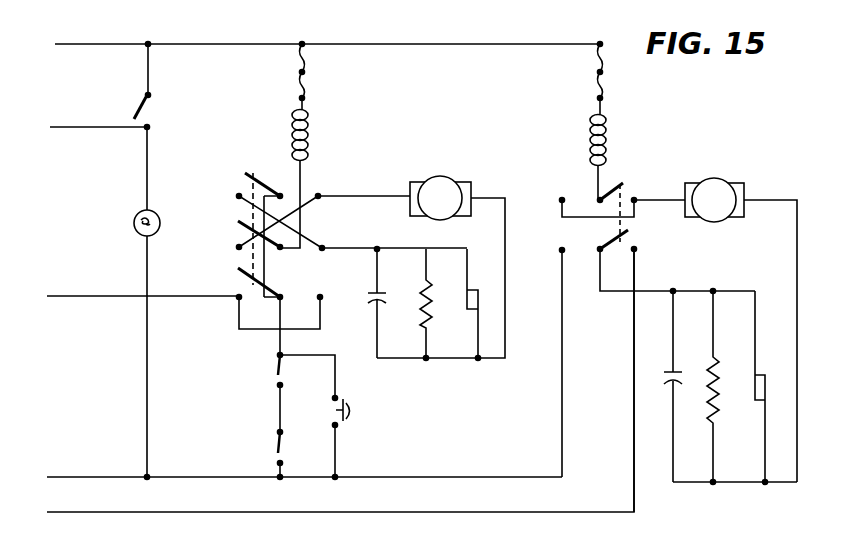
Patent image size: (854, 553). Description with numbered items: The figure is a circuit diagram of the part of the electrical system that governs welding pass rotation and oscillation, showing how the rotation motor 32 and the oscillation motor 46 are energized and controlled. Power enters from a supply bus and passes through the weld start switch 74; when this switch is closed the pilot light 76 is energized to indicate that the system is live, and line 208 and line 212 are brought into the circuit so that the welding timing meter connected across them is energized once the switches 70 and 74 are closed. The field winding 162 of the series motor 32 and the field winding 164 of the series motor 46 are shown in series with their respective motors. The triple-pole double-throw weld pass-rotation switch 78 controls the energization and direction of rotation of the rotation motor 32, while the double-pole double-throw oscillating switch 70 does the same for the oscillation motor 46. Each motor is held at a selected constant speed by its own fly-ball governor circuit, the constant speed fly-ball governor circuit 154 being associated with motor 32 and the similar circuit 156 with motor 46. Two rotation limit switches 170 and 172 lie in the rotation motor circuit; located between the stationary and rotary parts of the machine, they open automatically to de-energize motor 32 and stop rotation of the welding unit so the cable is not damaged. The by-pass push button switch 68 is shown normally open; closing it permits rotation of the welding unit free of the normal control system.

The rotation motor 32 is at (451, 181).
The oscillation motor 46 is at (722, 183).
The push button switch 68 is at (348, 417).
The oscillating switch 70 is at (626, 188).
The weld start switch 74 is at (146, 106).
The pilot light 76 is at (133, 225).
The weld pass-rotation switch 78 is at (232, 181).
The constant speed fly-ball governor circuit 154 is at (448, 362).
The constant speed fly-ball governor circuit 156 is at (738, 484).
The field winding 162 is at (308, 136).
The field winding 164 is at (607, 142).
The rotation limit switch 170 is at (276, 375).
The rotation limit switch 172 is at (276, 453).
The line 208 is at (110, 104).
The line 212 is at (68, 297).